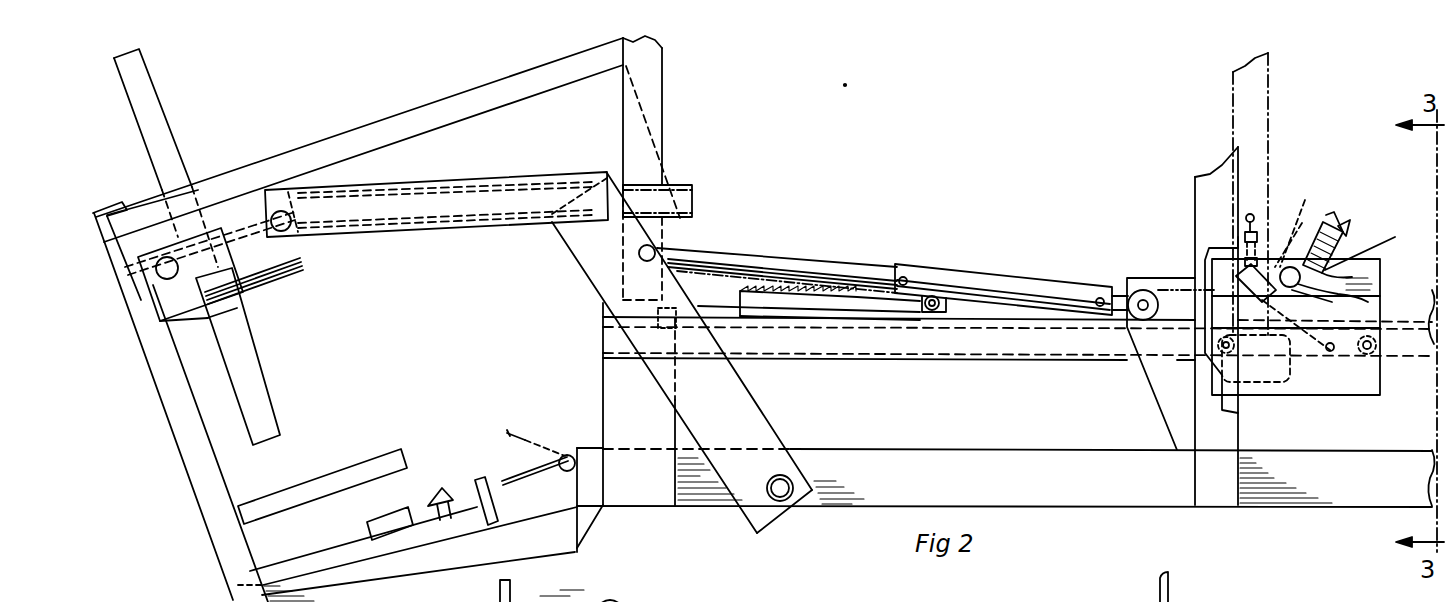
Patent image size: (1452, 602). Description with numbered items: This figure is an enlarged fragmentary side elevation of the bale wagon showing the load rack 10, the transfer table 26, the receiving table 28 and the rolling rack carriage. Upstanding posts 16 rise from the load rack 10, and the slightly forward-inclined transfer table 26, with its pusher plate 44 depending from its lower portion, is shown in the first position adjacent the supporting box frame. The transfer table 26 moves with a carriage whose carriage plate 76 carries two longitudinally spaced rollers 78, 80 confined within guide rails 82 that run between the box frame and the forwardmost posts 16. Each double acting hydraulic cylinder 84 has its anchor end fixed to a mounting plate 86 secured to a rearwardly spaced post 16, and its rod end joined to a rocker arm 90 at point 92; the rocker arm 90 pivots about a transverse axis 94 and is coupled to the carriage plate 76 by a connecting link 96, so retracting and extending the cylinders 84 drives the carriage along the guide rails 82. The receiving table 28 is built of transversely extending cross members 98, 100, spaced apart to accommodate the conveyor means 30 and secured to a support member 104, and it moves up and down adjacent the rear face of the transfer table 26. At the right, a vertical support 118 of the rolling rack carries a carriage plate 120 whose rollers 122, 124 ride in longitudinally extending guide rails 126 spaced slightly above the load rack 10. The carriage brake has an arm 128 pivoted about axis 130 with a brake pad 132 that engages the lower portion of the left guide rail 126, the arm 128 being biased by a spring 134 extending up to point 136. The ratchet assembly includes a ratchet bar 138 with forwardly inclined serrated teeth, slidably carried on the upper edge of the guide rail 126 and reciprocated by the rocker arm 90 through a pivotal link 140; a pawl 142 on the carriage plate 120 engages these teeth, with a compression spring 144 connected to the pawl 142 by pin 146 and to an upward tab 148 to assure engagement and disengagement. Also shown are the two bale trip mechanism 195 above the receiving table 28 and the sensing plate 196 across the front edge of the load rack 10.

The load rack 10 is at (1084, 494).
The upstanding posts 16 is at (664, 92).
The transfer table 26 is at (178, 90).
The receiving table 28 is at (346, 535).
The conveyor means 30 is at (438, 490).
The pusher plate 44 is at (242, 352).
The carriage plate 76 is at (310, 248).
The roller 78 is at (290, 208).
The roller 80 is at (150, 286).
The guide rails 82 is at (686, 204).
The double acting hydraulic cylinders 84 is at (1002, 284).
The mounting plate 86 is at (1164, 282).
The rocker arm 90 is at (758, 392).
The connection point 92 is at (658, 252).
The transverse axis 94 is at (782, 496).
The connecting link 96 is at (440, 205).
The cross member 98 is at (376, 516).
The cross member 100 is at (476, 480).
The support member 104 is at (240, 580).
The vertical supports 118 is at (1262, 98).
The carriage plate 120 is at (1302, 384).
The roller 122 is at (1217, 350).
The roller 124 is at (1376, 352).
The guide rails 126 is at (954, 338).
The arm 128 is at (1294, 292).
The axis 130 is at (1280, 302).
The brake pad 132 is at (1335, 352).
The spring 134 is at (1242, 236).
The point 136 is at (1252, 216).
The ratchet bar 138 is at (762, 296).
The pivotal link 140 is at (836, 322).
The pawl 142 is at (1396, 268).
The compression spring 144 is at (1340, 224).
The pin 146 is at (1368, 248).
The tab 148 is at (1350, 248).
The two bale trip mechanism 195 is at (342, 470).
The sensing plate 196 is at (504, 470).